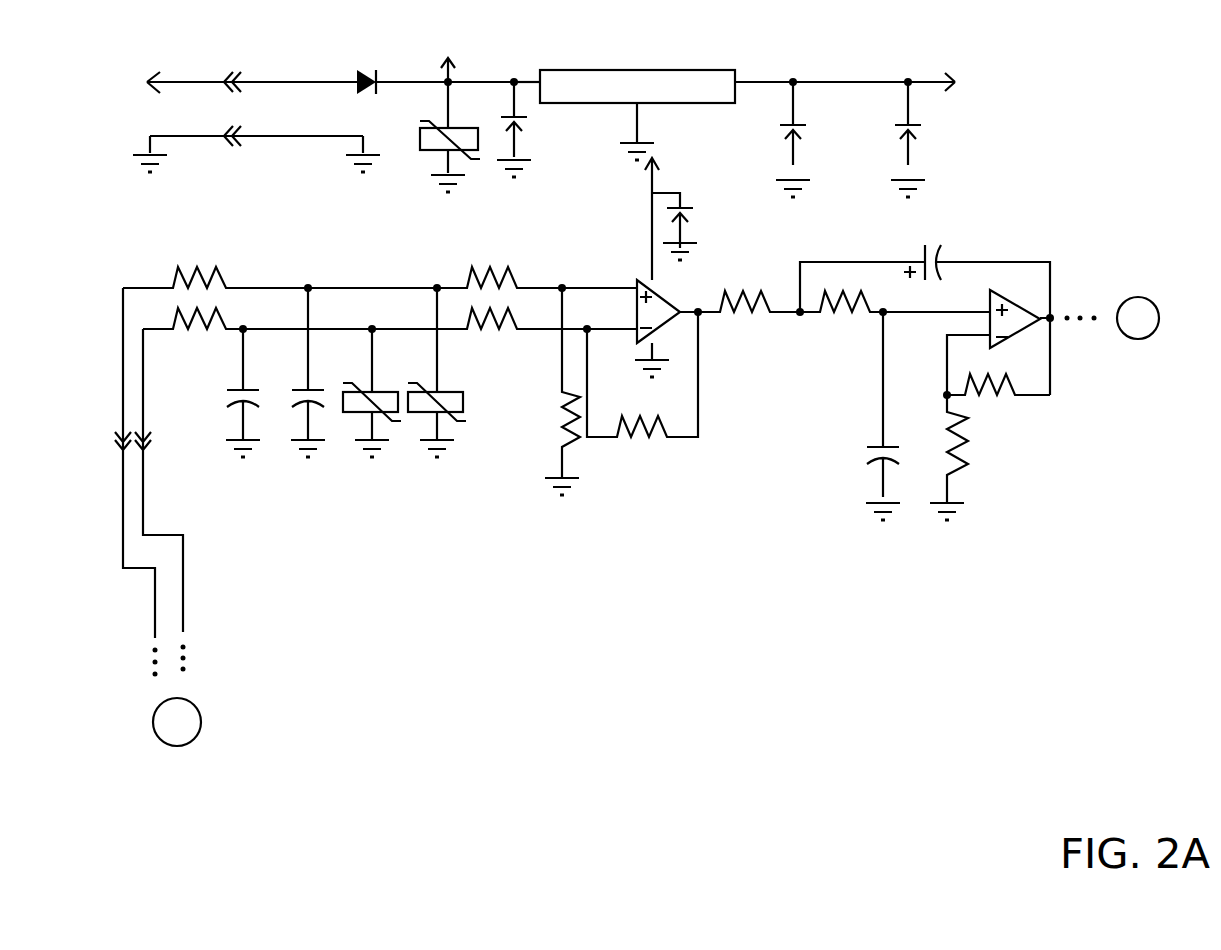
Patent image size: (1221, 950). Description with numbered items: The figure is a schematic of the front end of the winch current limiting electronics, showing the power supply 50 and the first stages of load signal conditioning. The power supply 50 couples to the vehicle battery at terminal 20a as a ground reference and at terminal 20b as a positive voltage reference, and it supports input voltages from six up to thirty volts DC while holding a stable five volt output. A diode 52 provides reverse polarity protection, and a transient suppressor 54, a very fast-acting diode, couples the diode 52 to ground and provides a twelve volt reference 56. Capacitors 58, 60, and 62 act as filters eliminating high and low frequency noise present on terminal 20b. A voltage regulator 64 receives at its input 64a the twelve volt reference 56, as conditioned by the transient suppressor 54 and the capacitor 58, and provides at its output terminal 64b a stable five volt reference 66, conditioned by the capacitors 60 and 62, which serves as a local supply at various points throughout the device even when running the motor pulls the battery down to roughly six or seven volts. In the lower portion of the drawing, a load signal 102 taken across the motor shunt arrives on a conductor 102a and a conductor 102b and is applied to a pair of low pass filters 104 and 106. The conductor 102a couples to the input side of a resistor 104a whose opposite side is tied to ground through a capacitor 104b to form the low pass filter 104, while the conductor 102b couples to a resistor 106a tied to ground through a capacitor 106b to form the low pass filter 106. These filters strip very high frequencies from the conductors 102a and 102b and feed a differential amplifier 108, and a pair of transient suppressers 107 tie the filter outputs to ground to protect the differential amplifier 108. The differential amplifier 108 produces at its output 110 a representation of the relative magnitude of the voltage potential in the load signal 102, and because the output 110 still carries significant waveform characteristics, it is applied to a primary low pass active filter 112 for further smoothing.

The terminal 20a is at (170, 137).
The terminal 20b is at (160, 72).
The power supply 50 is at (1016, 189).
The diode 52 is at (362, 70).
The transient suppressor 54 is at (421, 121).
The 12 volt reference 56 is at (448, 60).
The capacitor 58 is at (502, 118).
The capacitor 60 is at (790, 126).
The capacitor 62 is at (900, 125).
The voltage regulator 64 is at (602, 70).
The input 64a is at (521, 82).
The output terminal 64b is at (755, 82).
The 5 volt reference 66 is at (915, 82).
The load signal 102 is at (190, 560).
The conductor 102a is at (155, 632).
The conductor 102b is at (144, 522).
The low pass filter 104 is at (339, 284).
The resistor 104a is at (174, 284).
The capacitor 104b is at (290, 396).
The low pass filter 106 is at (283, 246).
The resistor 106a is at (223, 321).
The capacitor 106b is at (237, 404).
The transient suppressers 107 is at (400, 418).
The differential amplifier 108 is at (716, 372).
The output 110 is at (702, 311).
The primary low pass active filter 112 is at (1013, 262).